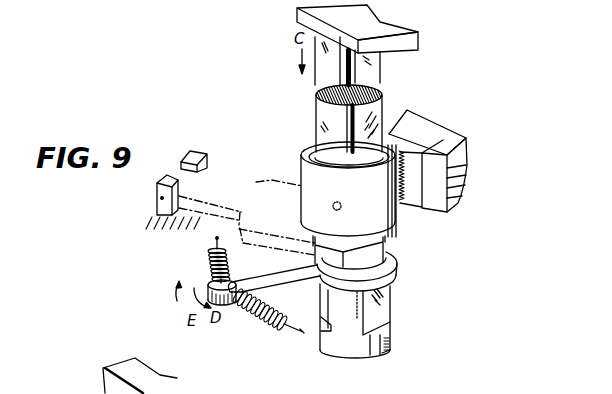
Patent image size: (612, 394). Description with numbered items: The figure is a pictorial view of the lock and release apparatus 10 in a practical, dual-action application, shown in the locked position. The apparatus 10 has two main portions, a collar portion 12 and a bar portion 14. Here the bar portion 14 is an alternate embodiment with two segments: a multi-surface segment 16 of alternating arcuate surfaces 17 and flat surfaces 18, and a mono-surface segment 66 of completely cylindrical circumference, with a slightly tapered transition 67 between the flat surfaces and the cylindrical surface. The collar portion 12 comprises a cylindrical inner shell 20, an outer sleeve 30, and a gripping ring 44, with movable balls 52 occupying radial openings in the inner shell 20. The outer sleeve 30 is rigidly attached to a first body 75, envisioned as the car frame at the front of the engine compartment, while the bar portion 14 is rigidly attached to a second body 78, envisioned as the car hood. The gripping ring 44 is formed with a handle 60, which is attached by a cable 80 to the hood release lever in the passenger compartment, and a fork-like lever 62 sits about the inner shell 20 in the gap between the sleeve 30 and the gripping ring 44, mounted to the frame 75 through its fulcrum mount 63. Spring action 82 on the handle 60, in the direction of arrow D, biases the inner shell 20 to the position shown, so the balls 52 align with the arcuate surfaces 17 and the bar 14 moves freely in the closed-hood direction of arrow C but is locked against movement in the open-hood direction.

The lock and release apparatus 10 is at (440, 223).
The collar portion 12 is at (403, 223).
The bar portion 14 is at (381, 108).
The multi-surface segment 16 is at (390, 302).
The arcuate surfaces 17 is at (343, 137).
The flat surfaces 18 is at (316, 143).
The inner shell 20 is at (395, 248).
The outer sleeve 30 is at (405, 167).
The gripping ring 44 is at (398, 273).
The movable ball 52 is at (333, 202).
The handle 60 is at (262, 277).
The lever 62 is at (256, 182).
The fulcrum mount 63 is at (150, 193).
The mono-surface segment 66 is at (388, 353).
The transition 67 is at (388, 330).
The first body 75 is at (452, 163).
The second body 78 is at (395, 30).
The cable 80 is at (212, 253).
The spring action 82 is at (275, 327).